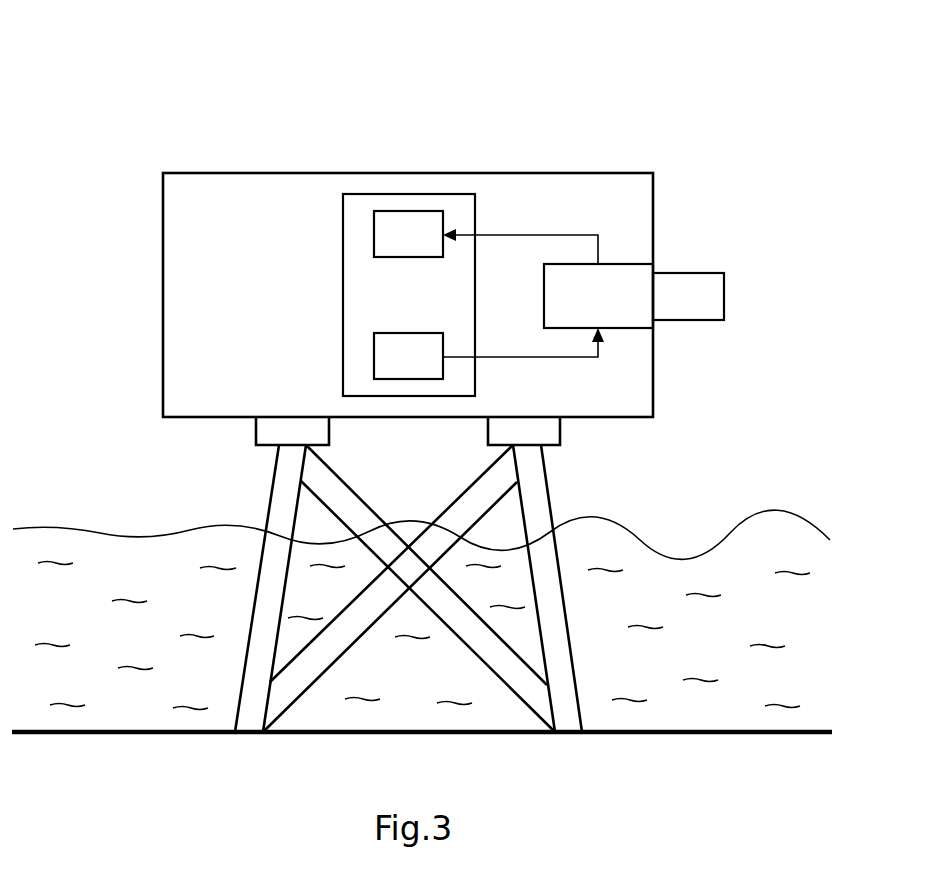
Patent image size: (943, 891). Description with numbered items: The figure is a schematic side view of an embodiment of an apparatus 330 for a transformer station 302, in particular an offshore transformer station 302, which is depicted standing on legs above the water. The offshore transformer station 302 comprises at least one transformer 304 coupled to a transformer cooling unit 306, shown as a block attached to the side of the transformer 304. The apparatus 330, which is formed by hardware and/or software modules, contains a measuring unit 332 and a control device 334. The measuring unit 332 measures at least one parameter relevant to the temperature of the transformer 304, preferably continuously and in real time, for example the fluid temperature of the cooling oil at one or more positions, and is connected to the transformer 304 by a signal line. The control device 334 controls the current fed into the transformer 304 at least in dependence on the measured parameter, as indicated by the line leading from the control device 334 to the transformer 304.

The offshore transformer station 302 is at (134, 74).
The transformer 304 is at (598, 296).
The transformer cooling unit 306 is at (688, 296).
The apparatus 330 is at (409, 295).
The measuring unit 332 is at (408, 234).
The control device 334 is at (408, 356).